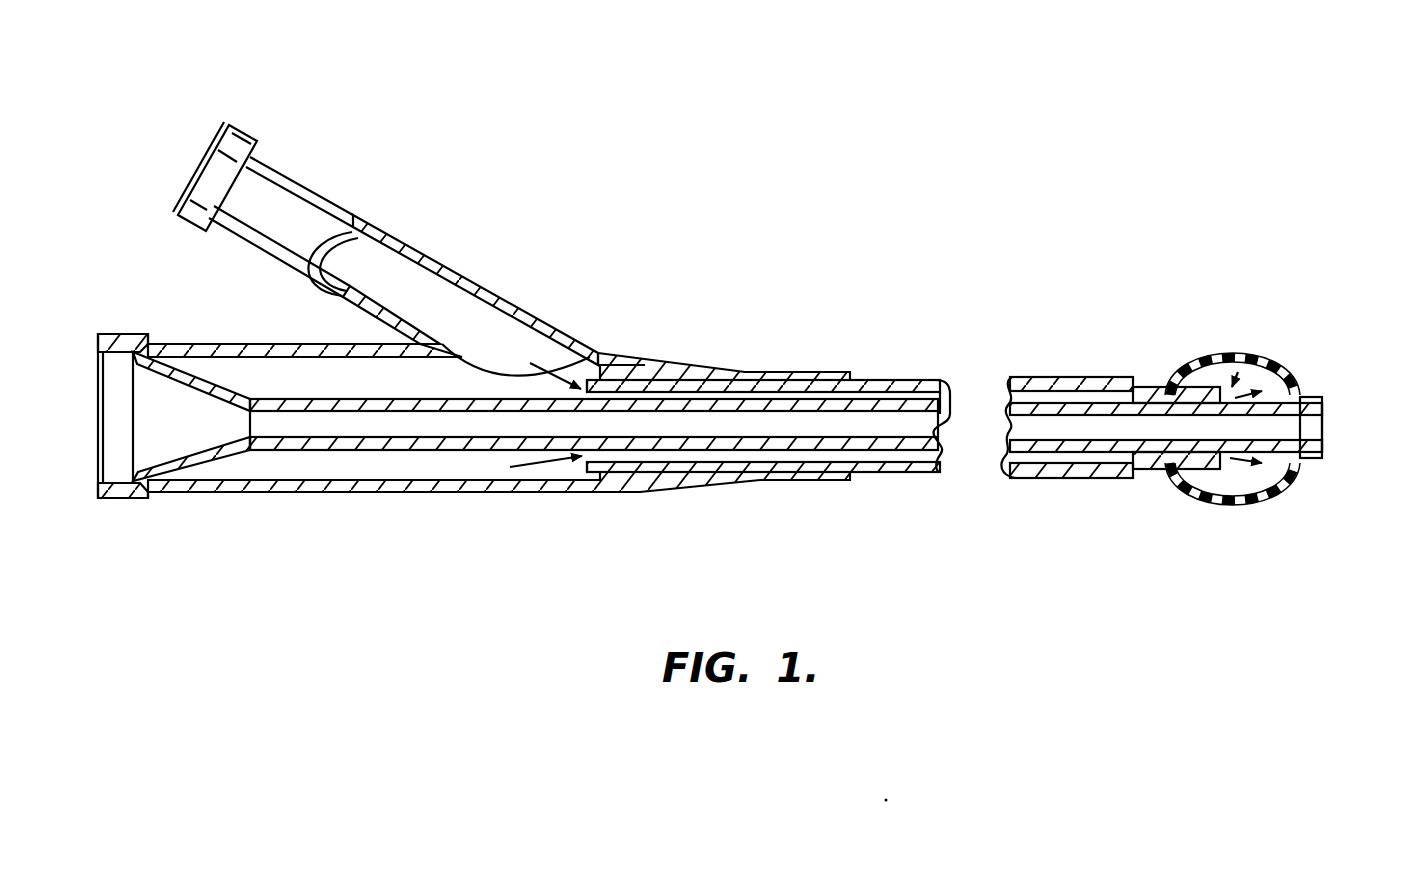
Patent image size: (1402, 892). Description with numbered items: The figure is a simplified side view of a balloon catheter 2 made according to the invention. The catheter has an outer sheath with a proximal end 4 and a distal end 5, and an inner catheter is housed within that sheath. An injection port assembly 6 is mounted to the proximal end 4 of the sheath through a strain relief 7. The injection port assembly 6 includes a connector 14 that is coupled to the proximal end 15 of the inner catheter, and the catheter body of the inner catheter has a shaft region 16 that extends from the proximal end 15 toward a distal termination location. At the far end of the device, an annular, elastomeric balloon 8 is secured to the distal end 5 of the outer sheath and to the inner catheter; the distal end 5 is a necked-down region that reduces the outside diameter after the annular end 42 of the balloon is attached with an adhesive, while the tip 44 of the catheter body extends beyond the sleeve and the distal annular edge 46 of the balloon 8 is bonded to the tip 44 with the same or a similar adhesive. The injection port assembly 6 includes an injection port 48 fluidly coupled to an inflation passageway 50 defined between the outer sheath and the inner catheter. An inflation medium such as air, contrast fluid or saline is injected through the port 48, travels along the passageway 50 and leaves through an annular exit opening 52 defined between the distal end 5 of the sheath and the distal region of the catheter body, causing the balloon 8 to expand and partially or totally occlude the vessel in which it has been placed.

The balloon catheter 2 is at (889, 69).
The proximal end 4 is at (589, 391).
The distal end 5 is at (1123, 377).
The injection port assembly 6 is at (482, 500).
The strain relief 7 is at (776, 378).
The annular elastomeric balloon 8 is at (1232, 355).
The connector 14 is at (115, 499).
The proximal end 15 is at (257, 450).
The shaft region 16 is at (377, 450).
The annular end 42 is at (1158, 470).
The tip 44 is at (1323, 432).
The distal annular edge 46 is at (1308, 398).
The injection port 48 is at (241, 128).
The inflation passageway 50 is at (913, 460).
The annular exit opening 52 is at (1232, 462).